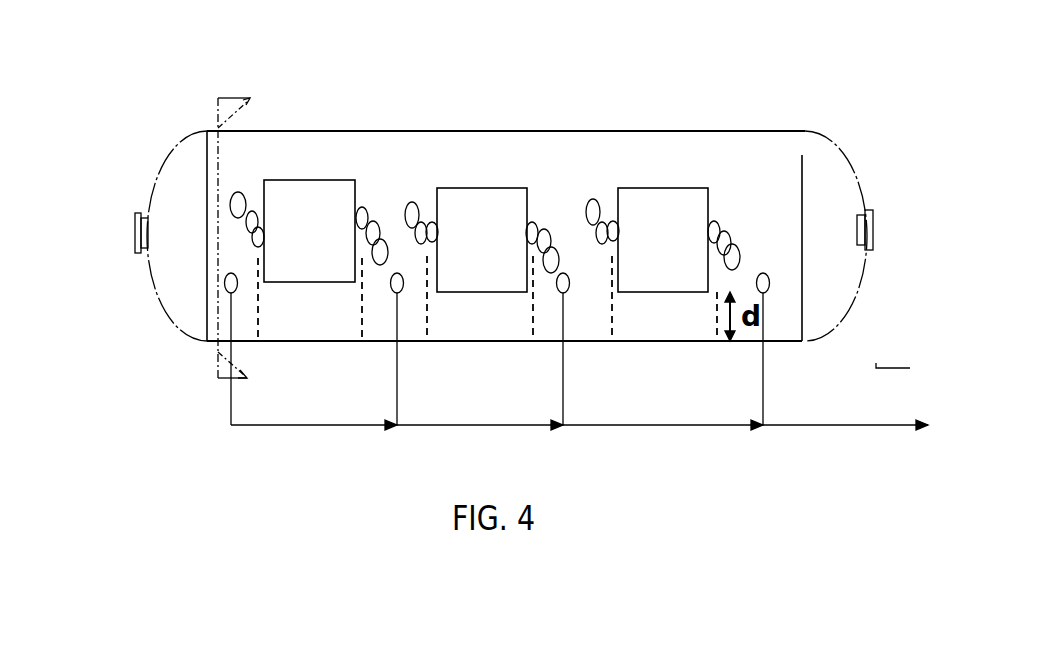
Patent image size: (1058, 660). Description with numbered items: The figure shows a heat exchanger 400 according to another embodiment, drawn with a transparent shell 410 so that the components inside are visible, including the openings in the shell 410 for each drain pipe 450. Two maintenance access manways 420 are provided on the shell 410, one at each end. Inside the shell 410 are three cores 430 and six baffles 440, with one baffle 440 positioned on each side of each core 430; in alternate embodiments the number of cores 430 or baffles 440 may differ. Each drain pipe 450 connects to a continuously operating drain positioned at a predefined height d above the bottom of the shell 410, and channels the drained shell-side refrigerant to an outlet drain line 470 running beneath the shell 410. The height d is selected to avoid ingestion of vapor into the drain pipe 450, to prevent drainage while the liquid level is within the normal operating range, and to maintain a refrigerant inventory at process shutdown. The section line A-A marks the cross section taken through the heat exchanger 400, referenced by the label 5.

The heat exchanger 400 is at (468, 195).
The shell 410 is at (608, 153).
The maintenance access manway 420 is at (866, 250).
The core 430 is at (308, 282).
The baffle 440 is at (361, 322).
The drain pipe 450 is at (762, 372).
The outlet drain line 470 is at (772, 425).
The section reference 5 is at (902, 376).